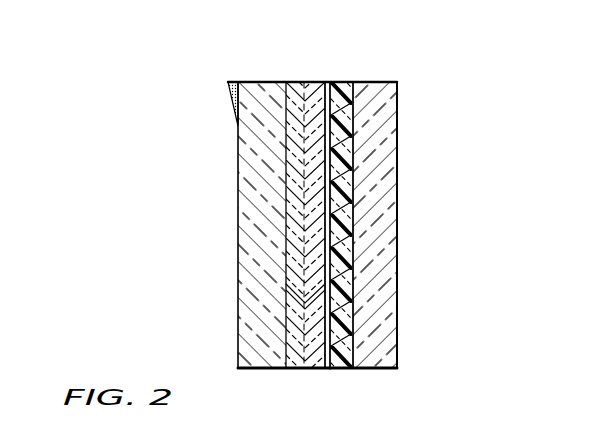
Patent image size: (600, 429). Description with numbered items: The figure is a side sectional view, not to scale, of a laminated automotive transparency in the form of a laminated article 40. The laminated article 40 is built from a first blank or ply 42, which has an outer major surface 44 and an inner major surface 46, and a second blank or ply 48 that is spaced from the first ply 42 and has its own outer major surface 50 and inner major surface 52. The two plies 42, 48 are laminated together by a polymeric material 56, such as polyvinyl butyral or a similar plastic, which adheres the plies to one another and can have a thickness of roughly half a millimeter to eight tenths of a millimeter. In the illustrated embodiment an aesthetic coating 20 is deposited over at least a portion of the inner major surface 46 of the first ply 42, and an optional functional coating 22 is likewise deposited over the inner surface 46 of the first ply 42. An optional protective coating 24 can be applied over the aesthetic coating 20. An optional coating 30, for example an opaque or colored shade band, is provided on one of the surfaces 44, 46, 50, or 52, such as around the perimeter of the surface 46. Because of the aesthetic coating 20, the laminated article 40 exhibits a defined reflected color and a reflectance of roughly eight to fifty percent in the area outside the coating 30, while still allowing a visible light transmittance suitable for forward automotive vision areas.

The laminated article 40 is at (131, 103).
The optional coating 30 is at (229, 100).
The outer major surface 44 is at (239, 323).
The functional coating 22 is at (297, 79).
The aesthetic coating 20 is at (313, 83).
The inner major surface 46 is at (288, 293).
The protective coating 24 is at (327, 371).
The polymeric material 56 is at (345, 84).
The inner major surface 52 is at (338, 329).
The outer major surface 50 is at (397, 345).
The first ply 42 is at (260, 370).
The second ply 48 is at (372, 370).